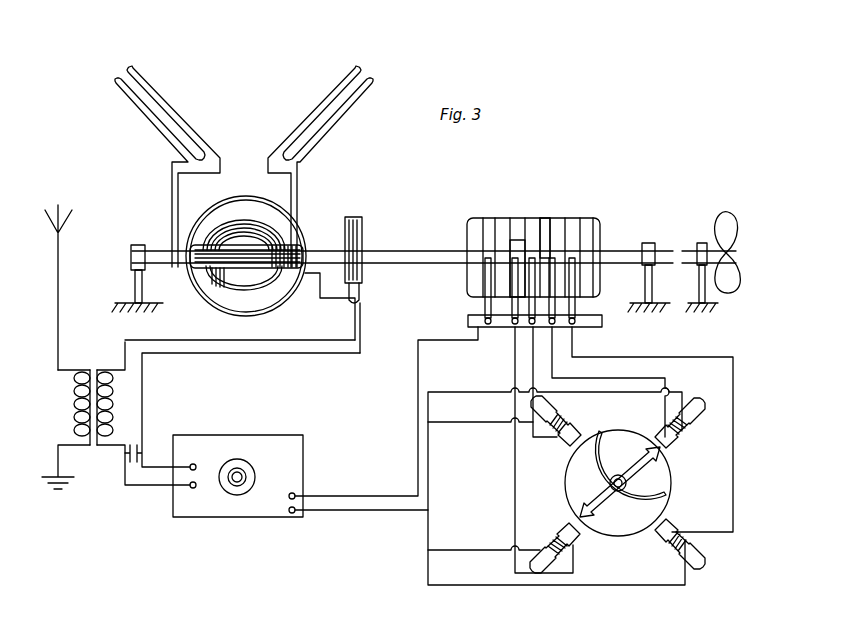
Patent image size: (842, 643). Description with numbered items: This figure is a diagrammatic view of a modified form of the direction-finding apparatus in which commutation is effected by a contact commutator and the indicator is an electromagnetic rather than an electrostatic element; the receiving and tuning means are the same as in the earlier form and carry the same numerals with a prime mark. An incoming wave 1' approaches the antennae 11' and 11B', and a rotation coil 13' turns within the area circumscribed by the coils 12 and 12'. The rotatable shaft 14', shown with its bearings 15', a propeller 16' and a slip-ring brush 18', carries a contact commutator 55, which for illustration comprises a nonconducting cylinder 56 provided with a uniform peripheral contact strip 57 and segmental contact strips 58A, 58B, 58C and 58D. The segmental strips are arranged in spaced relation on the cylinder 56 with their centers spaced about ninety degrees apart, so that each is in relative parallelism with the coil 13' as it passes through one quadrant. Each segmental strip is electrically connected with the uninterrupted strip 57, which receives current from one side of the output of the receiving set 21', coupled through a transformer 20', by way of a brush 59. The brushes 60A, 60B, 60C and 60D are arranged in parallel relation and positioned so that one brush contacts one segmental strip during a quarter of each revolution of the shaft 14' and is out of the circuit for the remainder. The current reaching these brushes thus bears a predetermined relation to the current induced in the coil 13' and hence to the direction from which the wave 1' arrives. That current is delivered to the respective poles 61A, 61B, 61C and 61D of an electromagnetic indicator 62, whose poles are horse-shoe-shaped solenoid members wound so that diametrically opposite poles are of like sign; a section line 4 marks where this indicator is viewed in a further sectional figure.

The incoming wave 1' is at (279, 37).
The section line 4- 4 is at (518, 573).
The antenna 11' is at (244, 166).
The antenna 11B' is at (90, 287).
The coil 12 is at (228, 260).
The coil 12' is at (232, 266).
The rotation coil 13' is at (328, 212).
The rotatable shaft 14' is at (434, 237).
The bearing 15' is at (398, 247).
The propeller 16' is at (745, 240).
The slip ring brush 18' is at (360, 268).
The transformer 20' is at (201, 413).
The receiving set 21' is at (325, 422).
The contact commutator 55 is at (581, 203).
The nonconducting cylinder 56 is at (468, 282).
The uniform peripheral contact strip 57 is at (490, 220).
The segmental contact strip 58A is at (513, 220).
The segmental contact strip 58B is at (535, 248).
The segmental contact strip 58C is at (621, 291).
The segmental contact strip 58D is at (578, 212).
The brush 59 is at (487, 303).
The brush 60A is at (505, 330).
The brush 60B is at (580, 306).
The brush 60C is at (580, 328).
The brush 60D is at (585, 327).
The pole 61A is at (563, 557).
The pole 61B is at (558, 410).
The pole 61C is at (688, 430).
The pole 61D is at (703, 562).
The electro-magnetic indicator 62 is at (699, 479).